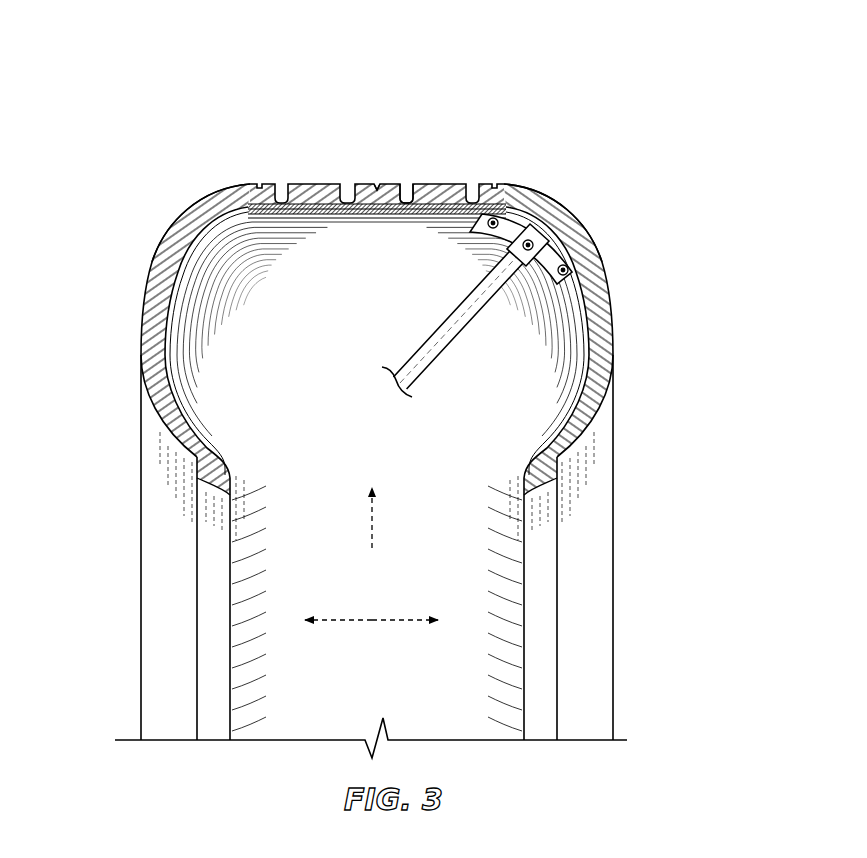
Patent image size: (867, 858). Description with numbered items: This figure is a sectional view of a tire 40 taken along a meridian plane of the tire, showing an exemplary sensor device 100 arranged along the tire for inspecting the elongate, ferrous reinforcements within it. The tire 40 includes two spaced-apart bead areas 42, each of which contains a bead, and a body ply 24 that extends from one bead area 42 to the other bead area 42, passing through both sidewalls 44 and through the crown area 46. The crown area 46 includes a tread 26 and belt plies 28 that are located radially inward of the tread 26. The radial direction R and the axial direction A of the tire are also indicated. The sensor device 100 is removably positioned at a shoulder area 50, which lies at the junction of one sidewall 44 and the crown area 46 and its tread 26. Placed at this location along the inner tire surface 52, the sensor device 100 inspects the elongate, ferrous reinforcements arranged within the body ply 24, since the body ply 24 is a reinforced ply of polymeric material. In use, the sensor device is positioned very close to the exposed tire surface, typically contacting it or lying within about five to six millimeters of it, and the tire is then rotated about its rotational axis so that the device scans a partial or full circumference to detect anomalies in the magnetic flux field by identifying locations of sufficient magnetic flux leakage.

The tire 40 is at (608, 104).
The shoulder area 50 is at (180, 203).
The sidewall 44 is at (118, 318).
The bead area 42 is at (245, 470).
The inner tire surface 52 is at (188, 392).
The belt plies 28 is at (272, 206).
The body ply 24 is at (578, 252).
The crown area 46 is at (377, 176).
The tread 26 is at (393, 195).
The sensor device 100 is at (508, 212).
The radial direction R is at (372, 520).
The axial direction A is at (383, 620).